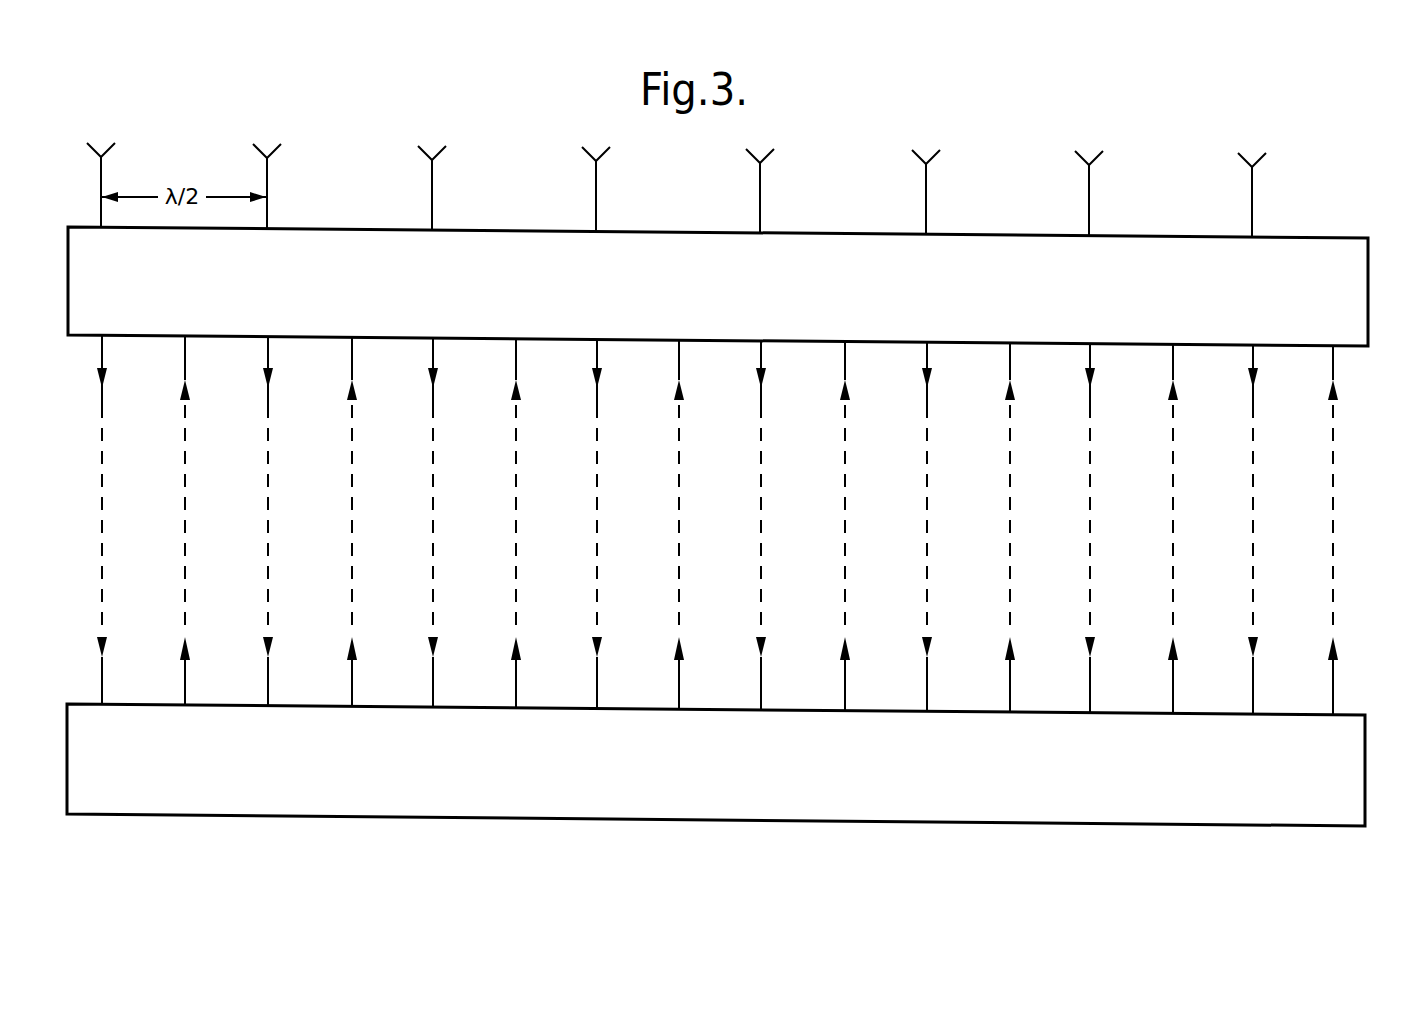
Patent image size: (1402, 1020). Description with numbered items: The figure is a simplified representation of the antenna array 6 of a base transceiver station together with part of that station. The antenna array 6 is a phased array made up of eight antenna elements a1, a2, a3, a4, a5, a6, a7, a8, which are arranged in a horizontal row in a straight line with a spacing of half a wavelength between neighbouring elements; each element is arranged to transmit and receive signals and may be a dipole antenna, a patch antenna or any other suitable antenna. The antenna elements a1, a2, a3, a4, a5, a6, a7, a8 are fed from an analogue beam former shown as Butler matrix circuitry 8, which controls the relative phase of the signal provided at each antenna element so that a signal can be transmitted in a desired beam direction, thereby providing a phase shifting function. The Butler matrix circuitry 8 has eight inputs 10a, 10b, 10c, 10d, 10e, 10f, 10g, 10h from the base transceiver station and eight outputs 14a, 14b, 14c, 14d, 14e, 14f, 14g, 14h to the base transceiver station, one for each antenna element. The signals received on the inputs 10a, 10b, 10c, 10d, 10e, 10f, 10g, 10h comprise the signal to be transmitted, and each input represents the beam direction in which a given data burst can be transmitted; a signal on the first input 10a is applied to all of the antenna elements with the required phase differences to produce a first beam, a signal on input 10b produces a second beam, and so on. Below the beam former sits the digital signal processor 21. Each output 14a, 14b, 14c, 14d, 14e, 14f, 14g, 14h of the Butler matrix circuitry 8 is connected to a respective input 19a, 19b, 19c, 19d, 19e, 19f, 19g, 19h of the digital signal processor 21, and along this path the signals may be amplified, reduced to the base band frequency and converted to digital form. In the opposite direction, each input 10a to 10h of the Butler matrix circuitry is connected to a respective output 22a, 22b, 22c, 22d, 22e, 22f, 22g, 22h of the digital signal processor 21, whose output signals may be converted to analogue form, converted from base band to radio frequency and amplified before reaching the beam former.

The antenna array 6 is at (1206, 127).
The Butler matrix circuitry 8 is at (1338, 252).
The digital signal processor 21 is at (93, 816).
The antenna element a1 is at (112, 148).
The antenna element a2 is at (278, 149).
The antenna element a3 is at (443, 151).
The antenna element a4 is at (607, 152).
The antenna element a5 is at (771, 154).
The antenna element a6 is at (937, 155).
The antenna element a7 is at (1100, 156).
The antenna element a8 is at (1263, 158).
The output 14a is at (104, 361).
The output 14b is at (270, 361).
The output 14c is at (435, 361).
The output 14d is at (599, 361).
The output 14e is at (763, 361).
The output 14f is at (929, 361).
The output 14g is at (1092, 361).
The output 14h is at (1255, 361).
The input 10a is at (187, 361).
The input 10b is at (354, 361).
The input 10c is at (518, 361).
The input 10d is at (681, 361).
The input 10e is at (847, 361).
The input 10f is at (1012, 361).
The input 10g is at (1175, 361).
The input 10h is at (1335, 361).
The input 19a is at (104, 681).
The input 19b is at (270, 681).
The input 19c is at (435, 681).
The input 19d is at (599, 681).
The input 19e is at (763, 681).
The input 19f is at (929, 681).
The input 19g is at (1092, 681).
The input 19h is at (1255, 681).
The output 22a is at (187, 681).
The output 22b is at (354, 681).
The output 22c is at (518, 681).
The output 22d is at (681, 681).
The output 22e is at (847, 681).
The output 22f is at (1076, 700).
The output 22g is at (1175, 681).
The output 22h is at (1335, 681).